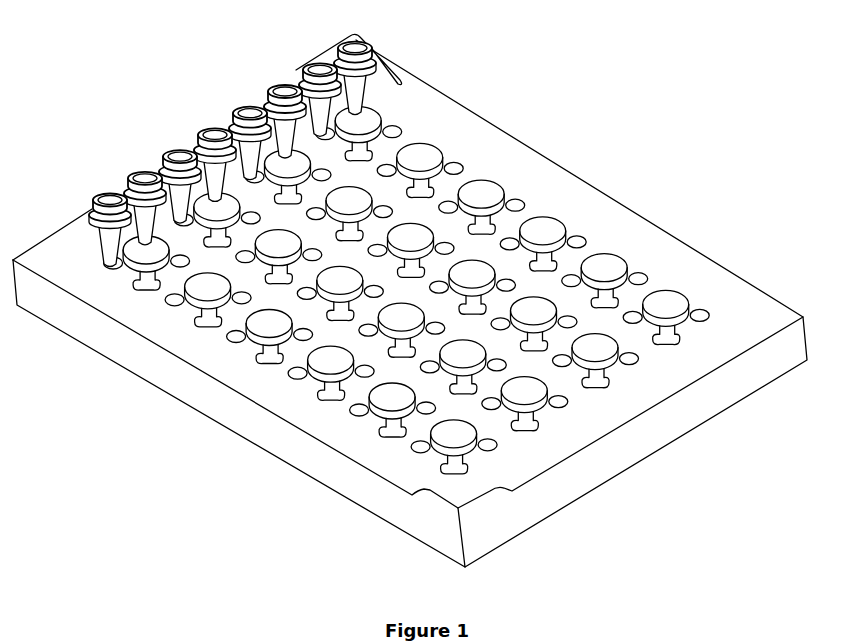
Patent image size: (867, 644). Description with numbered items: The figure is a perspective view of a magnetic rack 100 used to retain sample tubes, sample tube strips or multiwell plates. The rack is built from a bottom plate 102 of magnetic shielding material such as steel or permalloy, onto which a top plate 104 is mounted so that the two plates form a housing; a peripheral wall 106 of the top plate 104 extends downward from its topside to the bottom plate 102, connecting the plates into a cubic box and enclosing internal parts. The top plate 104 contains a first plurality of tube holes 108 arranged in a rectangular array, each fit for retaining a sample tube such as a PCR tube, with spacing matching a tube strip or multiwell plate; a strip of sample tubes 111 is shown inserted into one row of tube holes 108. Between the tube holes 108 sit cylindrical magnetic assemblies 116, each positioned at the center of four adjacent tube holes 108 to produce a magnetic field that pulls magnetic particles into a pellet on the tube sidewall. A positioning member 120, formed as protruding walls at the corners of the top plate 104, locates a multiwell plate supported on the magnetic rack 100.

The magnetic rack 100 is at (433, 296).
The bottom plate 102 is at (737, 403).
The top plate 104 is at (769, 289).
The peripheral wall 106 is at (799, 347).
The tube hole 108 is at (652, 268).
The sample tube 111 is at (106, 192).
The magnetic assembly 116 is at (640, 245).
The positioning member 120 is at (401, 73).